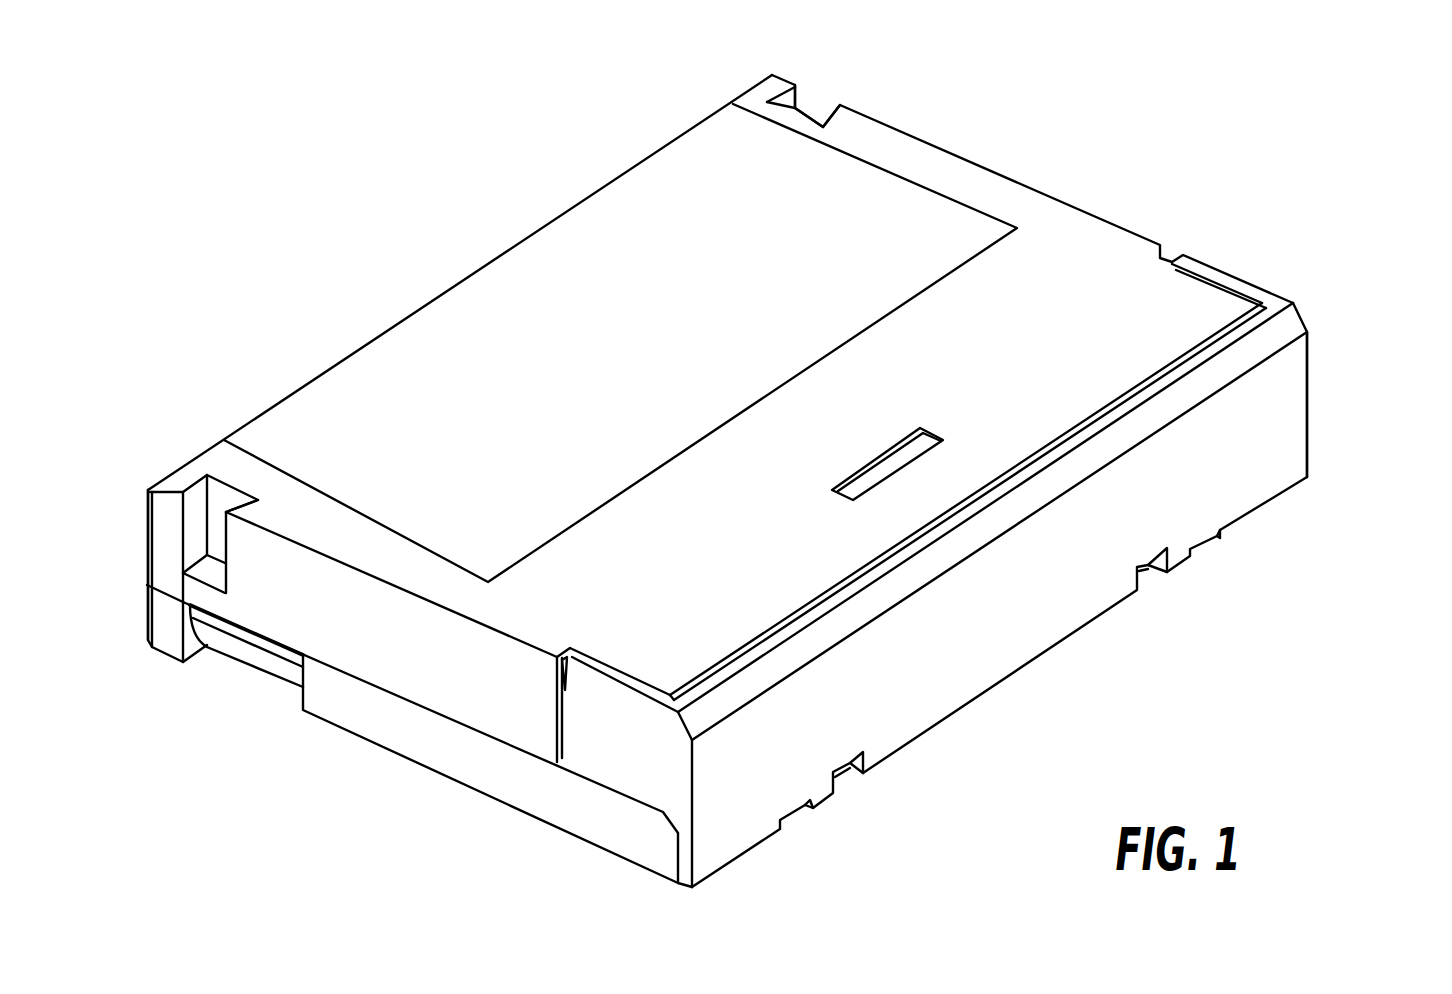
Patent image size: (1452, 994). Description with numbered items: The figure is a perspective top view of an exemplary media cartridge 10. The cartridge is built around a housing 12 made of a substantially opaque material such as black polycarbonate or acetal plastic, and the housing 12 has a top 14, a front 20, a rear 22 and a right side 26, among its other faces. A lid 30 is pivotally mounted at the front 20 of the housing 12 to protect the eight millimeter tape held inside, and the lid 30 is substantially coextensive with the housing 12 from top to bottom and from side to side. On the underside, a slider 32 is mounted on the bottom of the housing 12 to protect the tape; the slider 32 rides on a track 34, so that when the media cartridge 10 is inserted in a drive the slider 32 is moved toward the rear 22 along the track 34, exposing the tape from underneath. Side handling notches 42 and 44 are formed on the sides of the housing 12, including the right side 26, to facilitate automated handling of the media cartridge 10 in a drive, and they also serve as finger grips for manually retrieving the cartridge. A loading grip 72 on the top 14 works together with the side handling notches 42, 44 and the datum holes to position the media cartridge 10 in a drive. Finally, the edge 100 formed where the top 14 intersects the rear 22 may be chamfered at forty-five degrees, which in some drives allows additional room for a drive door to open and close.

The media cartridge 10 is at (1156, 126).
The housing 12 is at (957, 156).
The top 14 is at (710, 519).
The front 20 is at (1345, 408).
The rear 22 is at (517, 186).
The right side 26 is at (426, 666).
The lid 30 is at (1308, 370).
The slider 32 is at (405, 757).
The track 34 is at (247, 663).
The side handling notch 42 is at (803, 110).
The side handling notch 44 is at (182, 490).
The loading grip 72 is at (895, 444).
The edge 100 is at (150, 492).